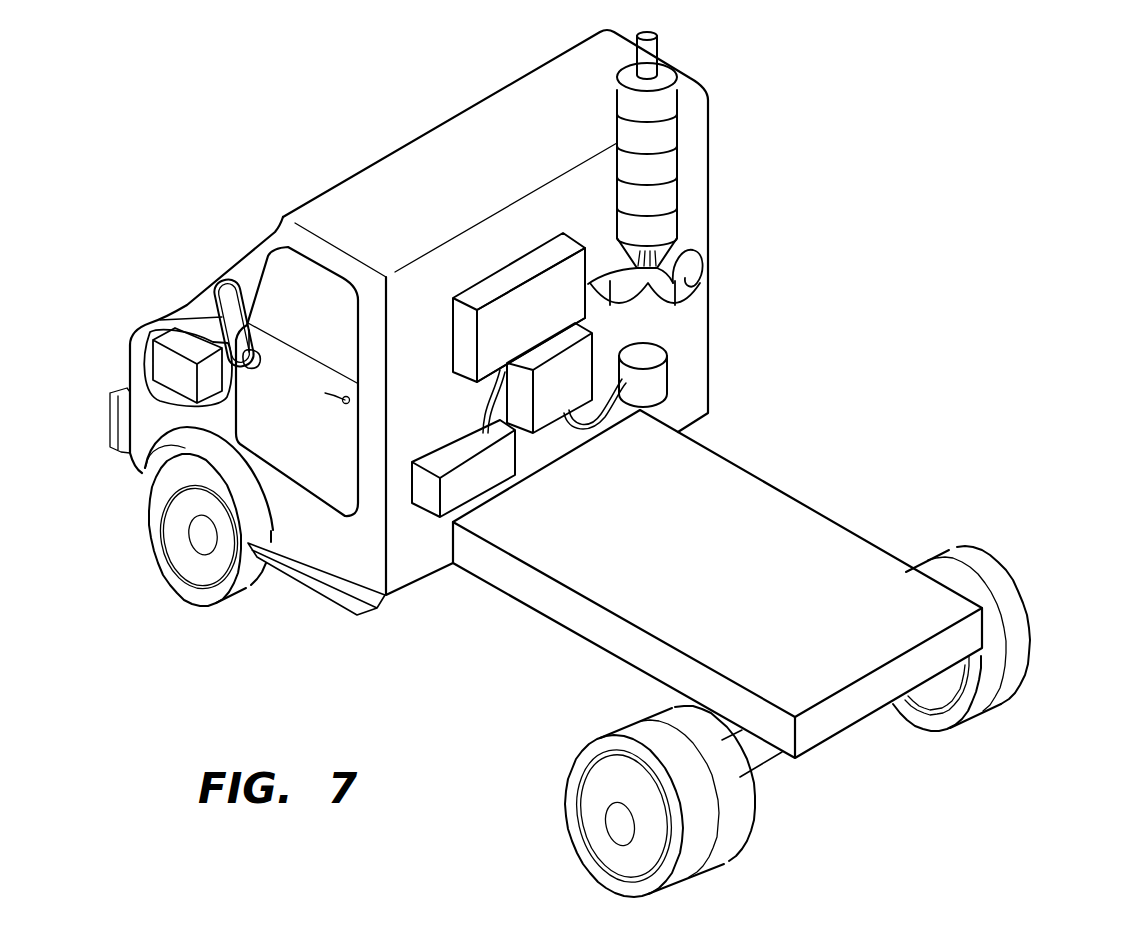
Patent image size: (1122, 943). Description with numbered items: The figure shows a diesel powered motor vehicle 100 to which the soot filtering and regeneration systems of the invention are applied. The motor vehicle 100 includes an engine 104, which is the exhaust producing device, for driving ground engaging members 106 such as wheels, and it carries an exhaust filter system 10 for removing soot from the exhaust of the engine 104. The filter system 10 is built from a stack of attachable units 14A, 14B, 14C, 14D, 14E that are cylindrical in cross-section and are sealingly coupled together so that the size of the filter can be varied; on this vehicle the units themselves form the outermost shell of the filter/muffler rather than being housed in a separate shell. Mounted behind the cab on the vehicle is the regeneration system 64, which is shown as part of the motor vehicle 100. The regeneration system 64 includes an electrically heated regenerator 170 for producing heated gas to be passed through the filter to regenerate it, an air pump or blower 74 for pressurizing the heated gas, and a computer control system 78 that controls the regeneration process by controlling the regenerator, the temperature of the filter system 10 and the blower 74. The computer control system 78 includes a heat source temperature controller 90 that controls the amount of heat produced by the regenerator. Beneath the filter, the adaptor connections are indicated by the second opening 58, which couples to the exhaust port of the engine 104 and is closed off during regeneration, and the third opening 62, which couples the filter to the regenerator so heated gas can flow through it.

The motor vehicle 100 is at (273, 165).
The engine 104 is at (173, 370).
The ground engaging members 106 is at (175, 517).
The filter system 10 is at (628, 128).
The attachable unit 14A is at (670, 103).
The attachable unit 14B is at (670, 133).
The attachable unit 14C is at (670, 163).
The attachable unit 14D is at (670, 194).
The attachable unit 14E is at (670, 225).
The second opening 58 is at (690, 284).
The third opening 62 is at (604, 291).
The regeneration system 64 is at (508, 243).
The electrically heated regenerator 170 is at (553, 325).
The air pump or blower 74 is at (577, 396).
The computer control system 78 is at (659, 397).
The heat source temperature controller 90 is at (452, 457).